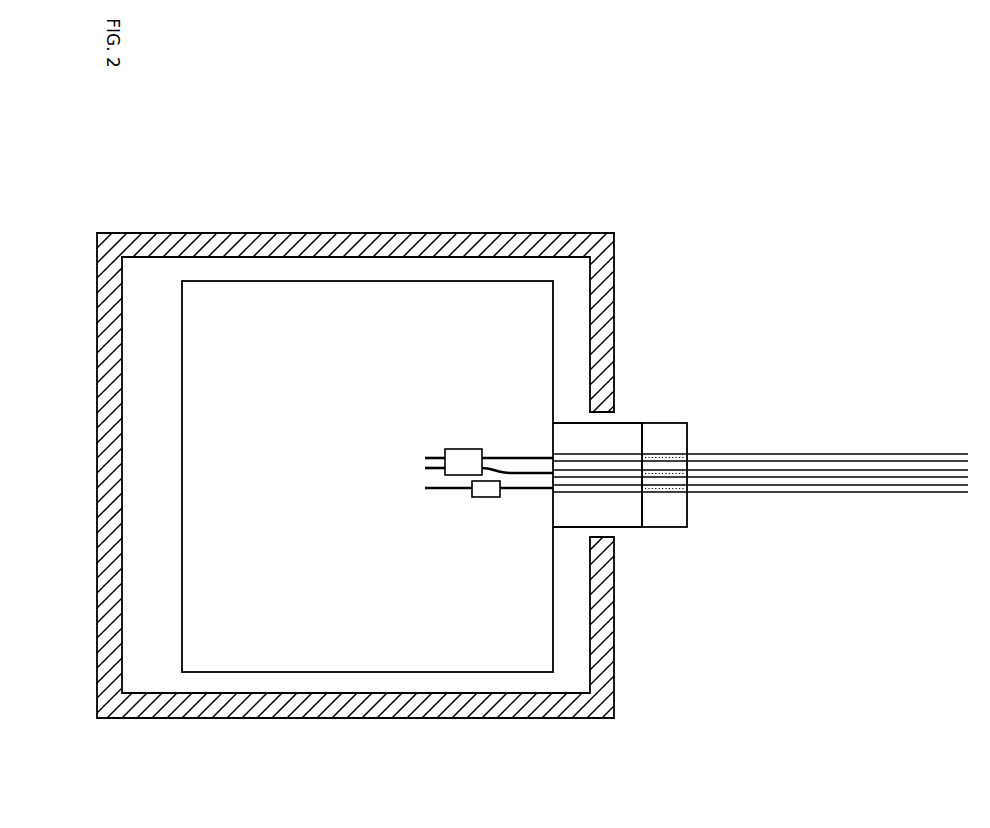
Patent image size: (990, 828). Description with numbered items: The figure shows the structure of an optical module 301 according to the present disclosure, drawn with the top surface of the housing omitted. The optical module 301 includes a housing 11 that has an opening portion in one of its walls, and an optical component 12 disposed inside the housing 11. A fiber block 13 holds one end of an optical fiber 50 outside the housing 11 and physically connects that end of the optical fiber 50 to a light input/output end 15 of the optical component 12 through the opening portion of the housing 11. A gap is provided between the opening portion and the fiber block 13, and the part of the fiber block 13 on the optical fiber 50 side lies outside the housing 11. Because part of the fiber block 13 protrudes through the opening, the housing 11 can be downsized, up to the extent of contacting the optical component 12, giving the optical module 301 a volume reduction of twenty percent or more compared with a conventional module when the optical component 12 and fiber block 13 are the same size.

The optical module 301 is at (663, 120).
The housing 11 is at (573, 233).
The optical component 12 is at (441, 281).
The fiber block 13 is at (684, 423).
The light input/output end 15 is at (555, 538).
The optical fiber 50 is at (947, 505).